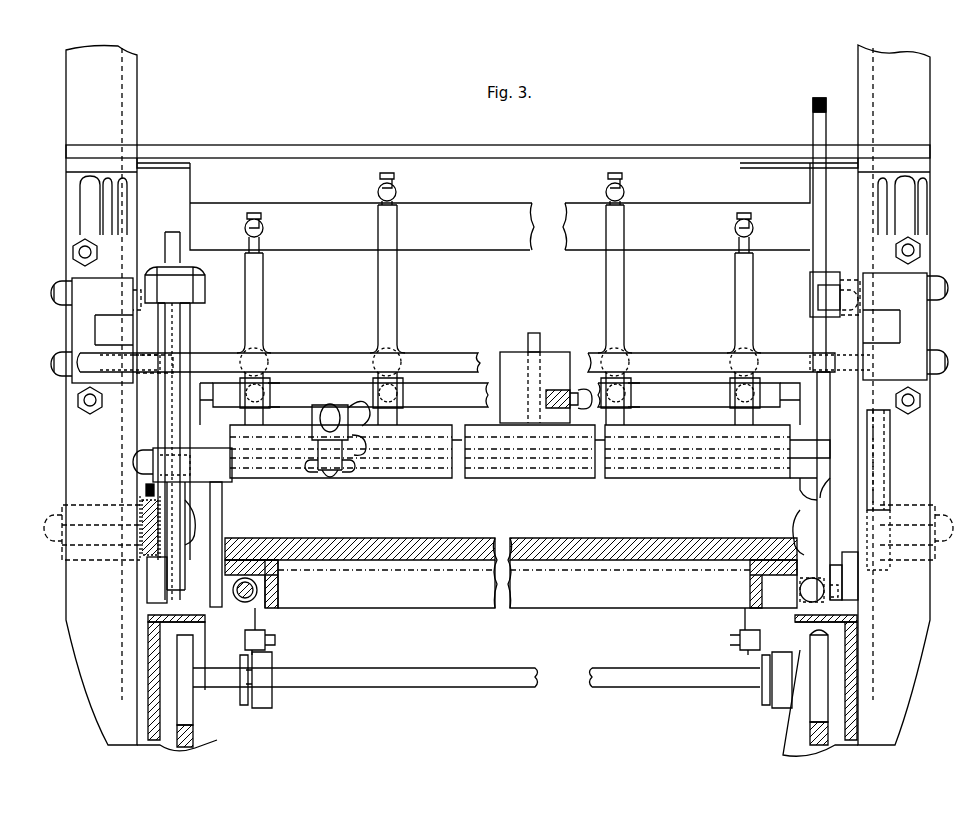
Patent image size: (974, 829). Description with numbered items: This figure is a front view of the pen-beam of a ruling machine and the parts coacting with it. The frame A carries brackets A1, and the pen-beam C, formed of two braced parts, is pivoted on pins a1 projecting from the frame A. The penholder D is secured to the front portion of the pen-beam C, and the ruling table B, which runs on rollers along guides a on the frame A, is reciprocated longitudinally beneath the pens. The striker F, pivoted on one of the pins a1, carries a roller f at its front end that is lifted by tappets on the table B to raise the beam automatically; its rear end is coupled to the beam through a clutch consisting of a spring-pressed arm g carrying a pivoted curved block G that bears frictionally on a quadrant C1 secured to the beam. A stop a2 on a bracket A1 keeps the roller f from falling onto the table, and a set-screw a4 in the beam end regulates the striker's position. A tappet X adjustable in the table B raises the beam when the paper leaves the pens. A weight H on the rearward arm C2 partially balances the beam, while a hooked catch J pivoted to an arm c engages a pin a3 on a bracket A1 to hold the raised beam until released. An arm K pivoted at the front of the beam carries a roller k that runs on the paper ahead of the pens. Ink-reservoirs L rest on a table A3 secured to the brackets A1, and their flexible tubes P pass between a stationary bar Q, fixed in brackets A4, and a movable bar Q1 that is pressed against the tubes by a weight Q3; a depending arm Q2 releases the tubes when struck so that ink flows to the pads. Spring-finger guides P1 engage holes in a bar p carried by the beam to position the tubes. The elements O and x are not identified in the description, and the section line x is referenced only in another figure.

The frame A is at (203, 622).
The brackets A1 is at (498, 395).
The table A3 is at (350, 146).
The brackets A4 is at (938, 330).
The guides a is at (195, 735).
The pins a1 is at (897, 506).
The stop a2 is at (140, 551).
The pin a3 is at (858, 575).
The set-screw a4 is at (146, 492).
The table B is at (405, 552).
The pen-beam C is at (185, 518).
The quadrant C1 is at (180, 325).
The arm C2 is at (528, 339).
The arm c is at (820, 565).
The penholder D is at (530, 451).
The striker F is at (167, 597).
The roller f is at (222, 474).
The curved block G is at (165, 248).
The spring-pressed arm g is at (158, 328).
The weight H is at (546, 387).
The hooked catch J is at (850, 552).
The arm K is at (318, 447).
The roller k is at (329, 475).
The ink-reservoirs L is at (500, 206).
The rod O is at (826, 249).
The flexible tubes P is at (258, 325).
The guides P1 is at (390, 393).
The bar p is at (230, 395).
The bar Q is at (684, 353).
The bar Q1 is at (866, 379).
The arm Q2 is at (830, 487).
The weight Q3 is at (812, 290).
The tappet X is at (222, 505).
The shaft x is at (492, 658).